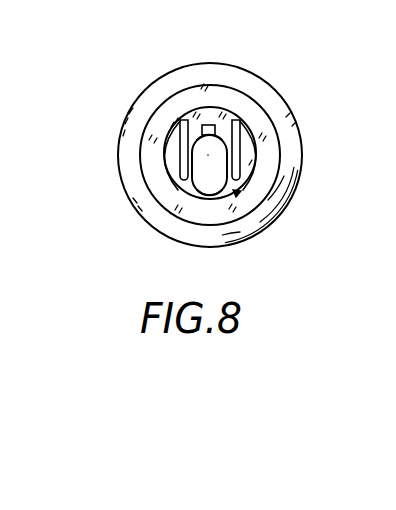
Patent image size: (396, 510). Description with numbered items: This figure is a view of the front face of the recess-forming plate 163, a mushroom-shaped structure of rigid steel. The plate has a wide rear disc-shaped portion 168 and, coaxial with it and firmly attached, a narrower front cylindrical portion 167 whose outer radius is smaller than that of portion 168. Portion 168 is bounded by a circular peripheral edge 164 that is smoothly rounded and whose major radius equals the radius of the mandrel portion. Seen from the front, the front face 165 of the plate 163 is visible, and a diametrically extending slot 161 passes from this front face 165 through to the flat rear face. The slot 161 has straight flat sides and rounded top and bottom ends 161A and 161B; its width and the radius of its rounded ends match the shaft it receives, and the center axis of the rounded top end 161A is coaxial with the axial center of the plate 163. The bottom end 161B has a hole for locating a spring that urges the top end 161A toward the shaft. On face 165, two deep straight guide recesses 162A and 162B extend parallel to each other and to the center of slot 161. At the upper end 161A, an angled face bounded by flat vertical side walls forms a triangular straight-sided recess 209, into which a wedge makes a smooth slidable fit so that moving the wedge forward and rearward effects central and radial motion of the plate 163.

The slot 161 is at (208, 167).
The top end of slot 161A is at (217, 142).
The bottom end of slot 161B is at (213, 192).
The guide recess 162A is at (188, 160).
The guide recess 162B is at (233, 152).
The recess-forming plate 163 is at (100, 62).
The circular peripheral edge 164 is at (152, 90).
The front face 165 is at (236, 193).
The front cylindrical portion 167 is at (243, 133).
The rear disc-shaped portion 168 is at (282, 170).
The recess 209 is at (208, 126).